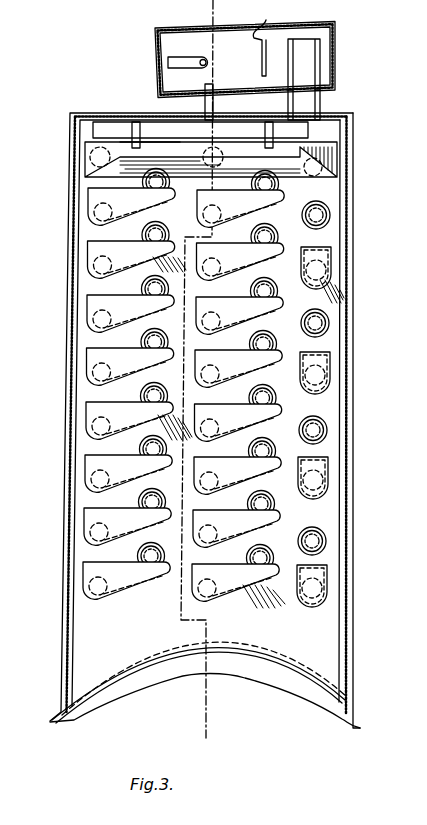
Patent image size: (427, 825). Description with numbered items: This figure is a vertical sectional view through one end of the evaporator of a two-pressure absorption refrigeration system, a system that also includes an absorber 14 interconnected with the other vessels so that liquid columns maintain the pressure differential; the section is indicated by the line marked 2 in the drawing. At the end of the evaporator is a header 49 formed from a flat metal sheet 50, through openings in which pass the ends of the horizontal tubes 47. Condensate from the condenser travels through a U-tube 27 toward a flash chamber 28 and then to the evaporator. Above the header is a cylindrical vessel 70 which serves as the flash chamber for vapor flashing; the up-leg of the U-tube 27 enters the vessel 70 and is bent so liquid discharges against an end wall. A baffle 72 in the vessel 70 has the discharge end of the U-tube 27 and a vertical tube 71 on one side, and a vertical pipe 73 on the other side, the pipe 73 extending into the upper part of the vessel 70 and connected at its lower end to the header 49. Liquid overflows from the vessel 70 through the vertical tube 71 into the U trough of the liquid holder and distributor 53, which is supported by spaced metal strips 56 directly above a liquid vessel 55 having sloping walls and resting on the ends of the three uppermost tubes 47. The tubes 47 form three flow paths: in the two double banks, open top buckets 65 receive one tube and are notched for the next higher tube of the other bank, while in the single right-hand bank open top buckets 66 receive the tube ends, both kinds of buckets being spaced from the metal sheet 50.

The section line 2- 2 is at (228, 10).
The absorber 14 is at (55, 713).
The U-tube 27 is at (168, 60).
The flash chamber 28 is at (349, 37).
The horizontal tubes 47 is at (320, 152).
The header 49 is at (60, 633).
The flat metal sheet 50 is at (330, 407).
The liquid holder and distributor 53 is at (310, 135).
The liquid vessel 55 is at (148, 147).
The metal strips 56 is at (133, 130).
The open top buckets 65 is at (88, 196).
The open top buckets 66 is at (327, 255).
The cylindrical vessel 70 is at (337, 58).
The vertical tube 71 is at (215, 107).
The baffle 72 is at (265, 39).
The vertical pipe 73 is at (322, 100).